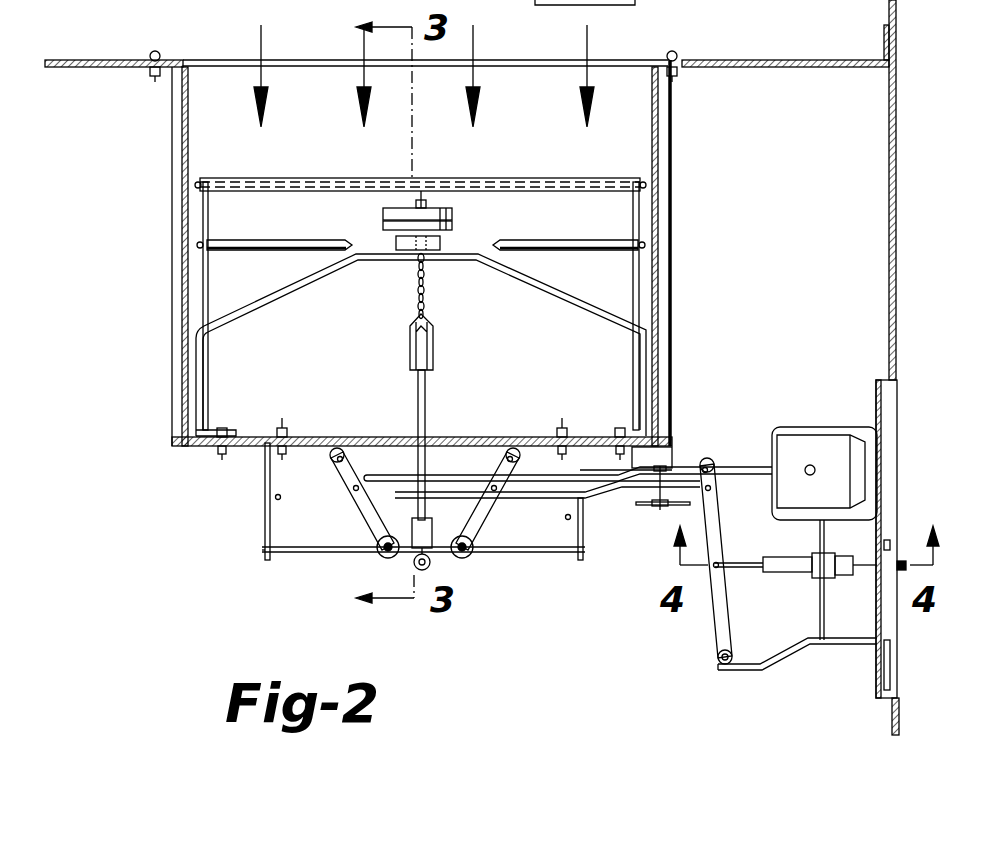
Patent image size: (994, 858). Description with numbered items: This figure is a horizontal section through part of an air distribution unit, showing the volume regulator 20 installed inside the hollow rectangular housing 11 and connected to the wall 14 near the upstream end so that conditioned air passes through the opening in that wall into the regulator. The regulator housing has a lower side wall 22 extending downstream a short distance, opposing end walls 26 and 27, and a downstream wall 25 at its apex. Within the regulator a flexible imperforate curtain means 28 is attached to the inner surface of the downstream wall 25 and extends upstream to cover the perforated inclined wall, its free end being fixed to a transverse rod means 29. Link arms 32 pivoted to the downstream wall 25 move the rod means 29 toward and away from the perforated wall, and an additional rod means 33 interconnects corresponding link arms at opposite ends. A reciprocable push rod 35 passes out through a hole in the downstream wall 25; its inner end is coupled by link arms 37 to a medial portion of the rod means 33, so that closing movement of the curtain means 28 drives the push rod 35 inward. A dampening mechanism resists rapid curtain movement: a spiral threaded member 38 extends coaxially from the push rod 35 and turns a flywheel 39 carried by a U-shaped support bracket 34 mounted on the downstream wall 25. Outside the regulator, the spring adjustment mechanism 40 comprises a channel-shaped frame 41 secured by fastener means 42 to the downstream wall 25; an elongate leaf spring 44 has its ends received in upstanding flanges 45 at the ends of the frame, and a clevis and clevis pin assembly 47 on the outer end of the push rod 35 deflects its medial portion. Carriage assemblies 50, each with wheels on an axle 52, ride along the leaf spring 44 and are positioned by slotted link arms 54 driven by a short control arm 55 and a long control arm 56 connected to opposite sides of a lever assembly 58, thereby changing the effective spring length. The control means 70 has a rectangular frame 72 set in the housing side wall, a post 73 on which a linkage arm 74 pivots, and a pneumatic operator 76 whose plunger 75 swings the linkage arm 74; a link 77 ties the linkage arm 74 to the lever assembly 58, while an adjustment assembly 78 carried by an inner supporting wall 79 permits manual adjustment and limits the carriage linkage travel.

The housing 11 is at (889, 190).
The wall 14 is at (752, 67).
The volume regulator 20 is at (372, 273).
The lower side wall 22 is at (333, 154).
The downstream wall 25 is at (244, 447).
The end wall 26 is at (652, 145).
The end wall 27 is at (188, 128).
The curtain means 28 is at (333, 339).
The rod means 29 is at (498, 178).
The link arm 32 is at (208, 267).
The rod means 33 is at (572, 246).
The support bracket 34 is at (578, 300).
The push rod 35 is at (425, 396).
The link arm 37 is at (434, 348).
The spiral threaded member 38 is at (428, 286).
The flywheel 39 is at (384, 216).
The spring adjustment mechanism 40 is at (485, 511).
The channel-shaped frame 41 is at (252, 495).
The fastener means 42 is at (290, 402).
The leaf spring 44 is at (508, 550).
The upstanding flange 45 is at (266, 536).
The clevis and clevis pin assembly 47 is at (446, 564).
The carriage assembly 50 is at (387, 564).
The axle 52 is at (375, 542).
The link arm 54 is at (478, 512).
The control arm 55 is at (550, 500).
The control arm 56 is at (396, 476).
The lever assembly 58 is at (664, 494).
The control means 70 is at (802, 539).
The frame 72 is at (884, 408).
The post 73 is at (770, 665).
The linkage arm 74 is at (718, 634).
The plunger 75 is at (760, 470).
The pneumatic operator 76 is at (834, 440).
The link 77 is at (690, 486).
The adjustment assembly 78 is at (791, 580).
The inner supporting wall 79 is at (822, 610).